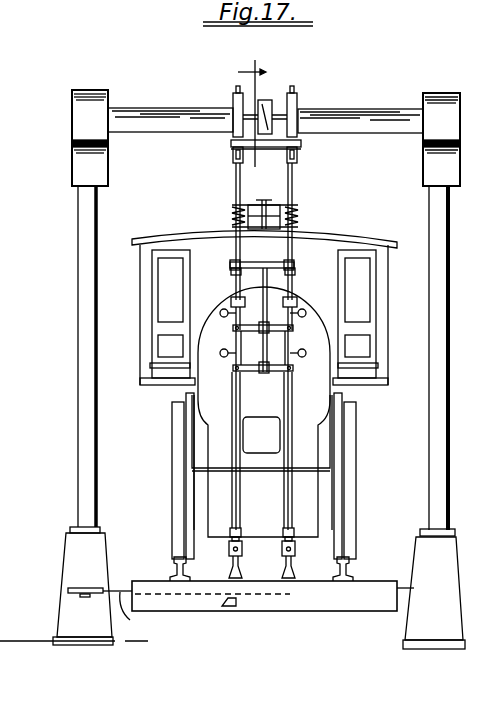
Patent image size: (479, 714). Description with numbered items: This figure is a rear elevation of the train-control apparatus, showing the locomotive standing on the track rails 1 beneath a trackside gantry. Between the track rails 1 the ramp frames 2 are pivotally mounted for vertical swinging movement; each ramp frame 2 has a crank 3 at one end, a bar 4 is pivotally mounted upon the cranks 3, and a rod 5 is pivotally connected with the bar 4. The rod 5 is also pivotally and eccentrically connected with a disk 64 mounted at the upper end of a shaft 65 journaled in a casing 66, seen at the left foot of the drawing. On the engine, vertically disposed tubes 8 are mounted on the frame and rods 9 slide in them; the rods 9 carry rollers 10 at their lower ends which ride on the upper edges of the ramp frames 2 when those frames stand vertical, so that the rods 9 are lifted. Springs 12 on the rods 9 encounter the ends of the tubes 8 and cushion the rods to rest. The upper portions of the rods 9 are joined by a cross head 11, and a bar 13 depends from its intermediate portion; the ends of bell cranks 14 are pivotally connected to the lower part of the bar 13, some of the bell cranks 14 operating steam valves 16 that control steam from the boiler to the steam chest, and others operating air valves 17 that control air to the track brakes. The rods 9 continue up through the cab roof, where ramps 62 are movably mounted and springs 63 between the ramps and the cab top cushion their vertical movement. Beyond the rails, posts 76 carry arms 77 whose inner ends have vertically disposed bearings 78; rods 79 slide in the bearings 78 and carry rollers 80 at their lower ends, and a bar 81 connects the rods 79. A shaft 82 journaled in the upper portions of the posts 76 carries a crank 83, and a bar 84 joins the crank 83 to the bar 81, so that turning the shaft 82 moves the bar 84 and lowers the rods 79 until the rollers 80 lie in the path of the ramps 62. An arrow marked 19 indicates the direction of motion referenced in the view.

The track rails 1 is at (170, 565).
The ramp frames 2 is at (291, 573).
The crank 3 is at (230, 600).
The bar 4 is at (247, 600).
The rod 5 is at (131, 611).
The tubes 8 is at (240, 503).
The rods 9 is at (229, 546).
The rollers 10 is at (229, 573).
The cross head 11 is at (273, 264).
The springs 12 is at (295, 273).
The bar 13 is at (261, 311).
The bell cranks 14 is at (254, 372).
The steam valves 16 is at (305, 310).
The air valves 17 is at (305, 350).
The rod 19 is at (251, 170).
The ramps 62 is at (293, 183).
The springs 63 is at (299, 212).
The disk 64 is at (76, 590).
The shaft 65 is at (80, 597).
The casing 66 is at (80, 625).
The posts 76 is at (78, 352).
The arms 77 is at (185, 128).
The bearings 78 is at (301, 112).
The rods 79 is at (297, 94).
The rollers 80 is at (234, 164).
The bar 81 is at (273, 148).
The shaft 82 is at (234, 104).
The crank 83 is at (268, 106).
The bar 84 is at (301, 133).